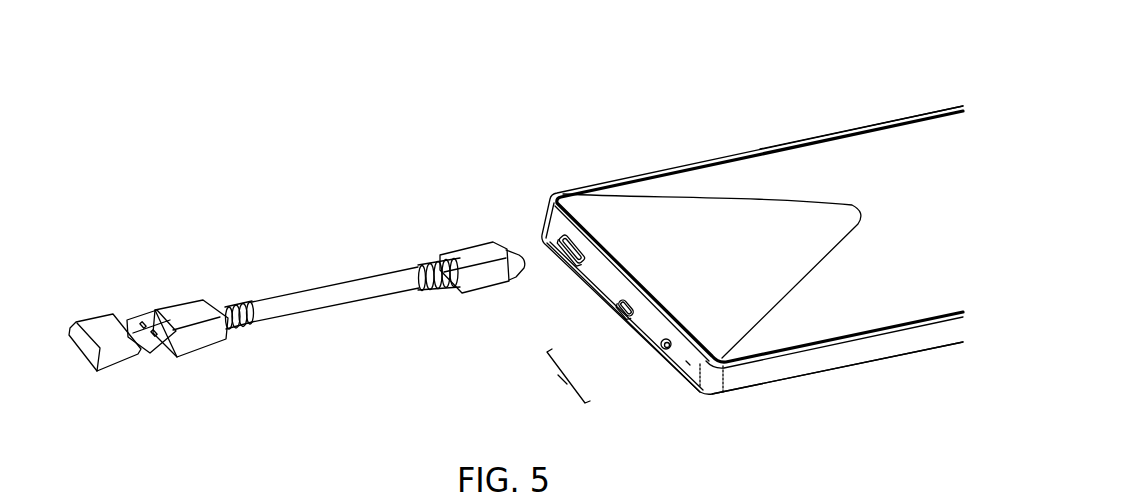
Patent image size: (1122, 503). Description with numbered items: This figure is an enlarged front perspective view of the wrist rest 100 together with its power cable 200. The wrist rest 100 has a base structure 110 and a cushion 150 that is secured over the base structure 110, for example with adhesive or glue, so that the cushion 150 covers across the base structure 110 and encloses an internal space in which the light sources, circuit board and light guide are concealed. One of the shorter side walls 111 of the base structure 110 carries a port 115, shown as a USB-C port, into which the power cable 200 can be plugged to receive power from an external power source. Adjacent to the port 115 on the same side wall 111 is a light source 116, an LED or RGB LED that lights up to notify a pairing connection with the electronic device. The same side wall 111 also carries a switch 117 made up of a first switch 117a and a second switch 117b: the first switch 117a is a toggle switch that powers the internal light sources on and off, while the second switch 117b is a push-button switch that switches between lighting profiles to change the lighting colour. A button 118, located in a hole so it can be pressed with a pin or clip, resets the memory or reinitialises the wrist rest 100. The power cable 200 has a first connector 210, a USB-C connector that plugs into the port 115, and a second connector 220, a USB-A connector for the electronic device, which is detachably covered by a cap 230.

The wrist rest 100 is at (802, 118).
The base structure 110 is at (787, 365).
The side walls 111 is at (568, 207).
The port 115 is at (569, 259).
The light source 116 is at (598, 274).
The switch 117 is at (554, 376).
The first switch 117a is at (625, 309).
The second switch 117b is at (663, 352).
The button 118 is at (688, 363).
The cushion 150 is at (895, 137).
The power cable 200 is at (325, 283).
The first connector 210 is at (503, 243).
The second connector 220 is at (145, 322).
The cap 230 is at (123, 364).